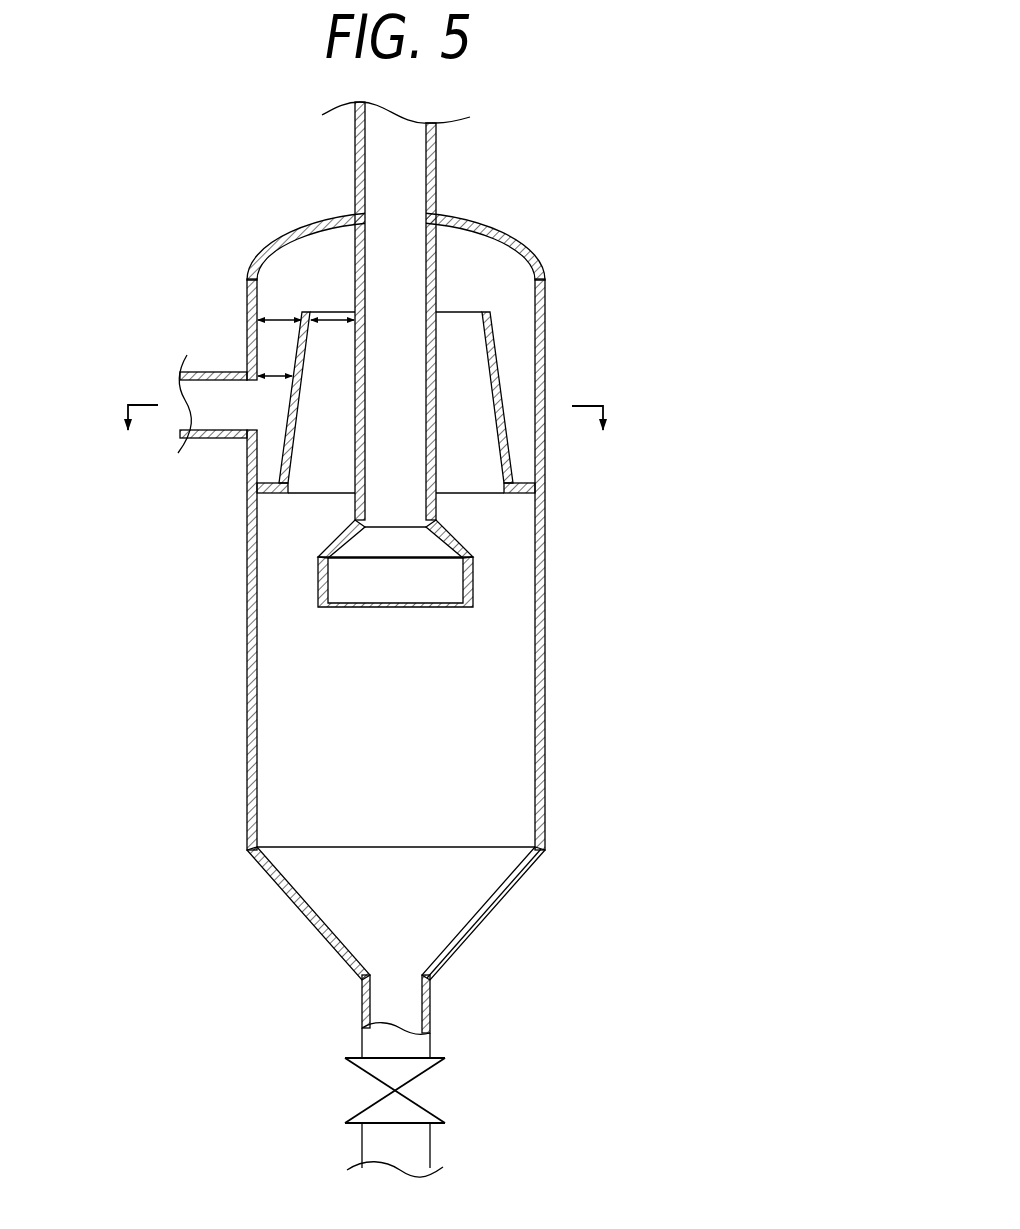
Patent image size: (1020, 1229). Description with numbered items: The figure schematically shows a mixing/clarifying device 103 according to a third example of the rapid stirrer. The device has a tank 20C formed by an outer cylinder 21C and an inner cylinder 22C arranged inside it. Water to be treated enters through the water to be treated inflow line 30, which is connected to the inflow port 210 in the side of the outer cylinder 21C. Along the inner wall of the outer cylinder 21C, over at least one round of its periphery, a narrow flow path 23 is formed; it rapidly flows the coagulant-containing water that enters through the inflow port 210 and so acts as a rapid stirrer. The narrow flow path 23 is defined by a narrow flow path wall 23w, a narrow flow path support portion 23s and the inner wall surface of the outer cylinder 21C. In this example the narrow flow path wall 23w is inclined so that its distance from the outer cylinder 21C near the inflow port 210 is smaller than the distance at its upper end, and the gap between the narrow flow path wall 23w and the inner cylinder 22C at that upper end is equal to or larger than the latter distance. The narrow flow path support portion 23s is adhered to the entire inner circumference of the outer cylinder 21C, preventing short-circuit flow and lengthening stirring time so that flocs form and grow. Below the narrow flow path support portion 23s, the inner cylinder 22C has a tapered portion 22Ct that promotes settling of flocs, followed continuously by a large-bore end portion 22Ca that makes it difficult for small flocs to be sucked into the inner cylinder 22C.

The mixing/clarifying device 103 is at (434, 638).
The tank 20C is at (504, 540).
The outer cylinder 21C is at (545, 627).
The inner cylinder 22C is at (510, 552).
The tapered portion 22Ct is at (447, 539).
The large-bore end portion 22Ca is at (473, 577).
The narrow flow path 23 is at (366, 404).
The narrow flow path wall 23w is at (302, 395).
The narrow flow path support portion 23s is at (277, 493).
The water to be treated inflow line 30 is at (205, 370).
The inflow port 210 is at (252, 403).